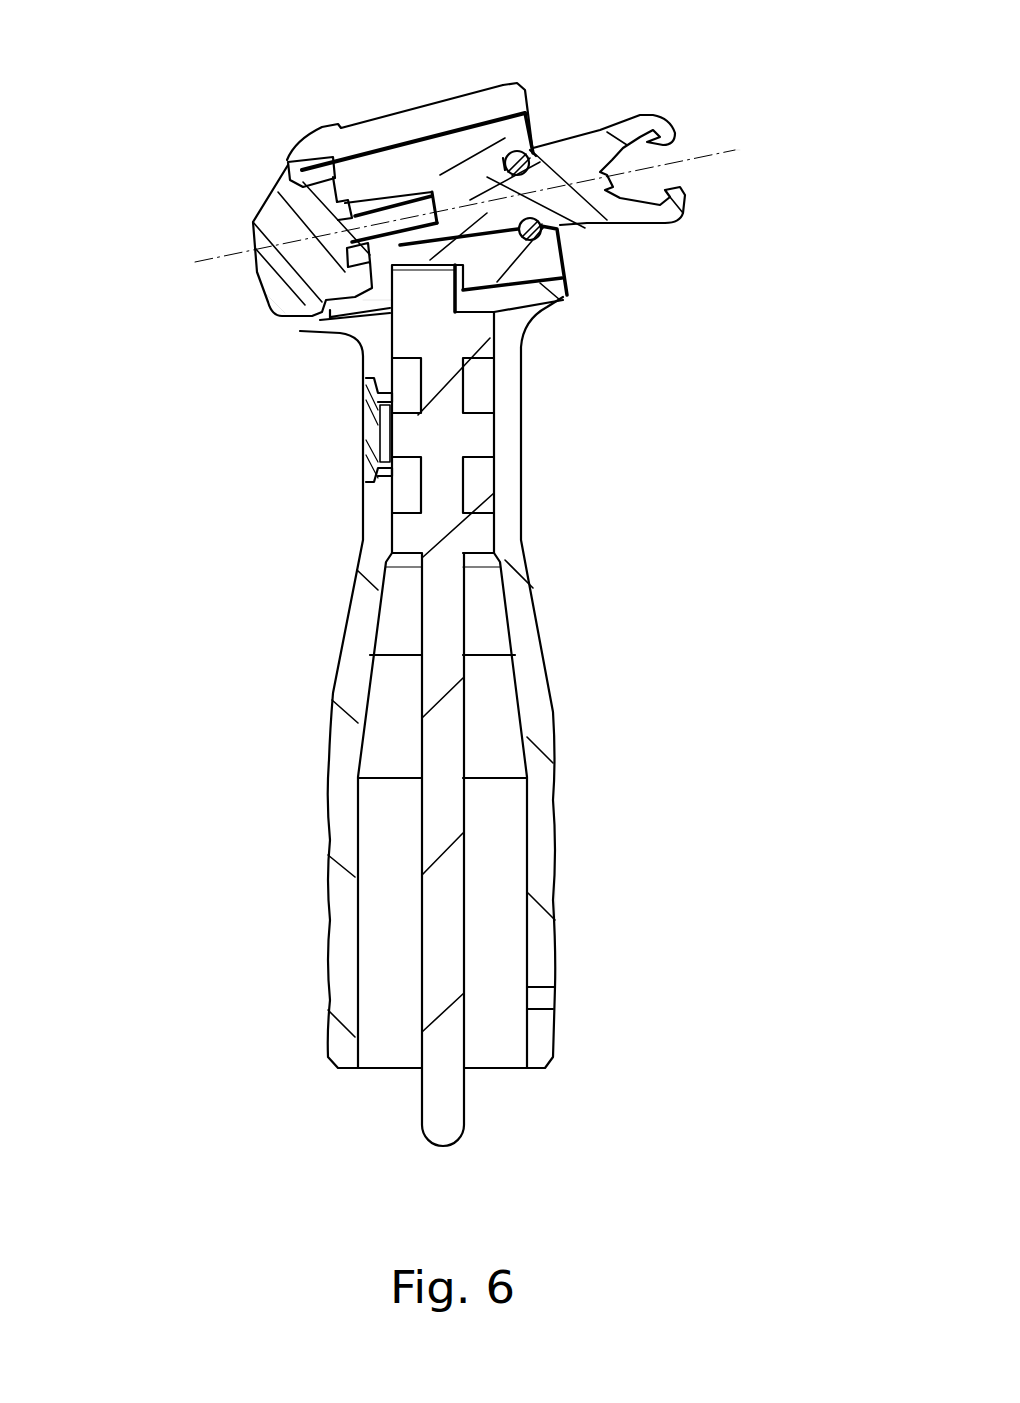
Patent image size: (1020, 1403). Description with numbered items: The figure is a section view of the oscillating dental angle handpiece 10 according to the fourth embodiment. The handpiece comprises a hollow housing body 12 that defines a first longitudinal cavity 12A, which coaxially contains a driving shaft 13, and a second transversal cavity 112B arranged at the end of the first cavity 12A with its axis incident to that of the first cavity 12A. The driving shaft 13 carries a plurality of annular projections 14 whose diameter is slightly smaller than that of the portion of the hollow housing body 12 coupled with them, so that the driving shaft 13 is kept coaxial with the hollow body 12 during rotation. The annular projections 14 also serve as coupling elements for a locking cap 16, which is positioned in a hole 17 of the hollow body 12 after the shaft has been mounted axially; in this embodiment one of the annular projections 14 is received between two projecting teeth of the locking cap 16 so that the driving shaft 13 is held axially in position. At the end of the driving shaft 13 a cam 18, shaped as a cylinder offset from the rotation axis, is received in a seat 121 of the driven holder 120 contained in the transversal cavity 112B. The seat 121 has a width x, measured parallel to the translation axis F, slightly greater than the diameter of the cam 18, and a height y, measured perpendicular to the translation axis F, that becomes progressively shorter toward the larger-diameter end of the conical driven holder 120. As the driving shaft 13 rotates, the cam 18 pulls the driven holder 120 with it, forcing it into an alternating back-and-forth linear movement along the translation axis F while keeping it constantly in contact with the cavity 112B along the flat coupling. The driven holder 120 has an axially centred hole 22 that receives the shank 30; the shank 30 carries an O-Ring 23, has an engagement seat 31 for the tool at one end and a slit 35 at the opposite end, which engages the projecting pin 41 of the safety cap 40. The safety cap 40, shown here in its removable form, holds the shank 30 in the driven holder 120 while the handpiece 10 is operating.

The oscillating dental angle handpiece 10 is at (758, 135).
The hollow housing body 12 is at (553, 751).
The first longitudinal cavity 12A is at (532, 815).
The driving shaft 13 is at (458, 1093).
The annular projections 14 is at (470, 338).
The locking cap 16 is at (365, 437).
The hole 17 is at (367, 483).
The cam 18 is at (363, 340).
The hole 22 is at (540, 220).
The O-Ring 23 is at (527, 137).
The shank 30 is at (455, 192).
The engagement seat 31 is at (675, 132).
The slit 35 is at (395, 220).
The safety cap 40 is at (296, 204).
The projecting pin 41 is at (320, 152).
The second transversal cavity 112B is at (533, 272).
The driven holder 120 is at (483, 162).
The seat 121 is at (548, 288).
The translation axis F is at (225, 258).
The width x is at (335, 330).
The height y is at (322, 297).